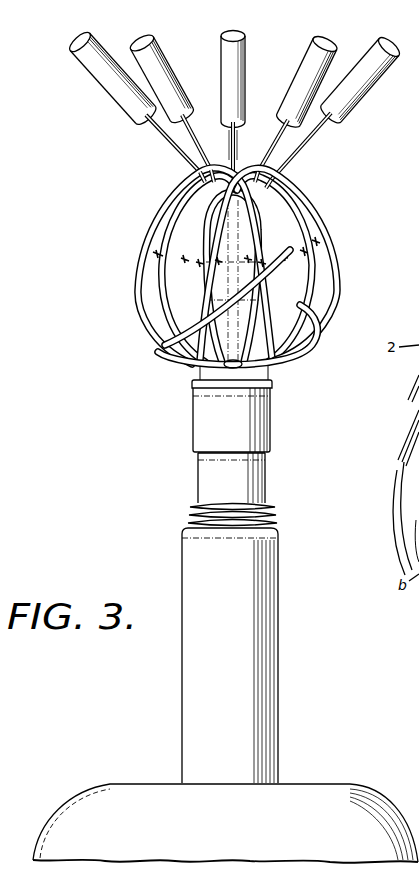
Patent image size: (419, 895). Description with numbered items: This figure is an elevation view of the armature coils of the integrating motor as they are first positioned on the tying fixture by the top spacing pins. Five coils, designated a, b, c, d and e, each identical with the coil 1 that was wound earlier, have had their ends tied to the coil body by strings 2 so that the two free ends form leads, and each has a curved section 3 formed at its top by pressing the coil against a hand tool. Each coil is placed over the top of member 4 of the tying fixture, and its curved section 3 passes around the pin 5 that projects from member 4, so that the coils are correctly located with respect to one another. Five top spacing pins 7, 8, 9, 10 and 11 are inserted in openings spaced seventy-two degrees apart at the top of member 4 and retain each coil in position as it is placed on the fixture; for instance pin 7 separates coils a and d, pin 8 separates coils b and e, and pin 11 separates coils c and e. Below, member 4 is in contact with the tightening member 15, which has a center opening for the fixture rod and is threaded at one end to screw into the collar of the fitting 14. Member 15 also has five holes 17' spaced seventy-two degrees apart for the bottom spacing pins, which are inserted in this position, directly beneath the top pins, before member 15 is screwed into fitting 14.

The coil 1 is at (240, 256).
The strings 2 is at (158, 232).
The curved section 3 is at (217, 167).
The member 4 is at (238, 222).
The pin 5 is at (238, 137).
The top spacing pin 7 is at (233, 155).
The top spacing pin 8 is at (162, 145).
The top spacing pin 9 is at (197, 130).
The top spacing pin 10 is at (279, 131).
The top spacing pin 11 is at (313, 136).
The fitting 14 is at (255, 625).
The tightening member 15 is at (258, 420).
The holes 17' is at (183, 377).
The coil a is at (171, 341).
The coil b is at (139, 295).
The coil c is at (173, 301).
The coil d is at (318, 305).
The coil e is at (304, 343).